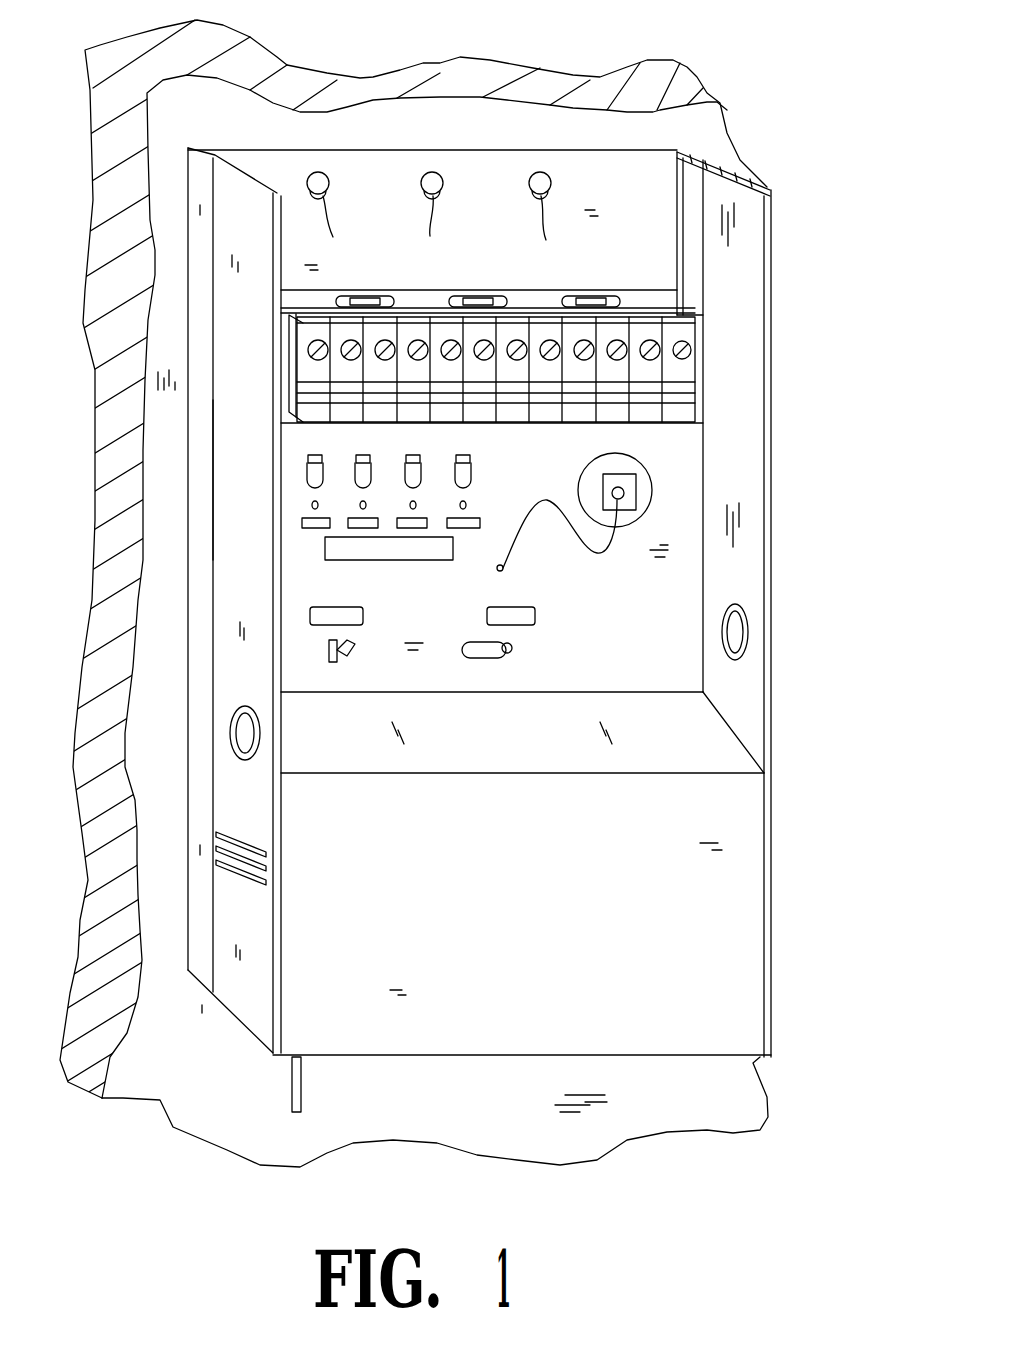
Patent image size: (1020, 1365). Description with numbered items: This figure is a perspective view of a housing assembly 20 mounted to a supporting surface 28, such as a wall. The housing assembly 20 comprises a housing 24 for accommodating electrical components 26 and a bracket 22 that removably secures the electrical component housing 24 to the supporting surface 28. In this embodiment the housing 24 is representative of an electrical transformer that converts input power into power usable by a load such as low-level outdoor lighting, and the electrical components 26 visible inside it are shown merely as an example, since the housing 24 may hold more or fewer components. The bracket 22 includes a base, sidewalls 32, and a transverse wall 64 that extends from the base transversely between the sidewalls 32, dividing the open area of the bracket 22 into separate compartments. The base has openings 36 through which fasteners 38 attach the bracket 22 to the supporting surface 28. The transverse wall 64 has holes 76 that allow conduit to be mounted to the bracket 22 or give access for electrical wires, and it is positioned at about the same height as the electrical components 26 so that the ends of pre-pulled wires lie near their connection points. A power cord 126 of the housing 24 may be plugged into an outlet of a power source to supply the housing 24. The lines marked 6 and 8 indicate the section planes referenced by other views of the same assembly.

The section line 6- 6 is at (262, 688).
The section line 8- 8 is at (479, 240).
The housing assembly 20 is at (804, 176).
The bracket 22 is at (190, 988).
The housing 24 is at (808, 810).
The electrical components 26 is at (478, 434).
The supporting surface 28 is at (707, 1113).
The sidewalls 32 is at (203, 516).
The openings 36 is at (444, 237).
The fasteners 38 is at (330, 187).
The transverse wall 64 is at (647, 293).
The holes 76 is at (488, 290).
The power cord 126 is at (305, 1094).